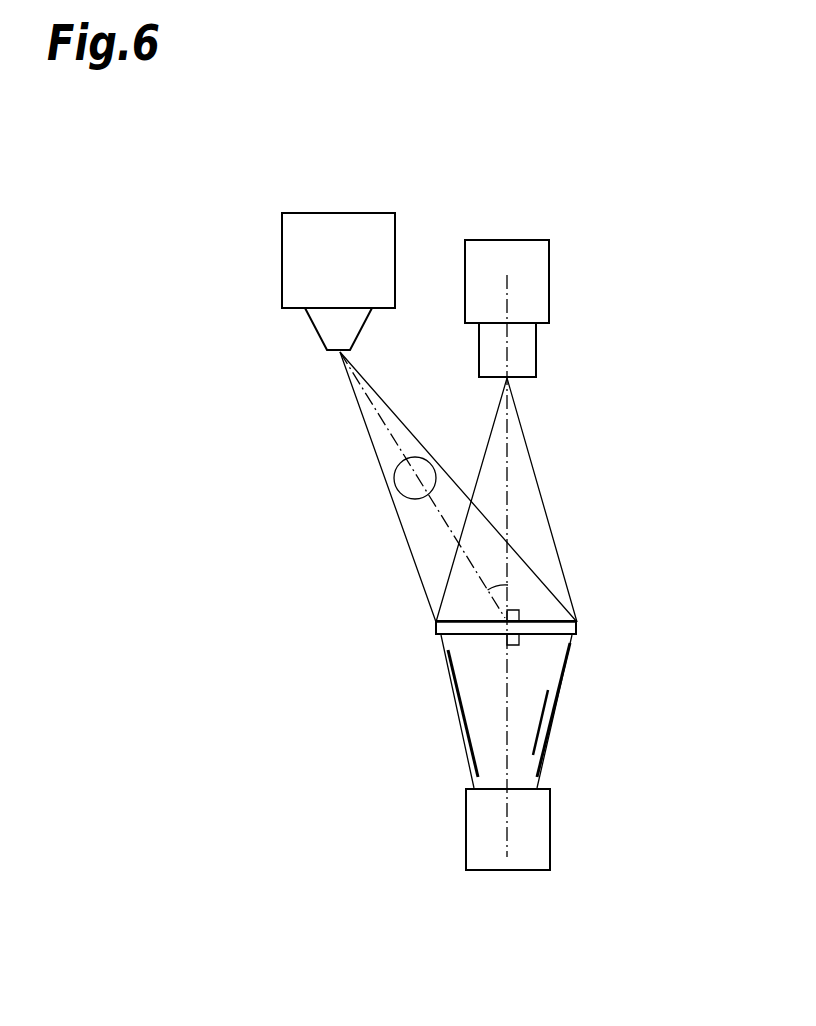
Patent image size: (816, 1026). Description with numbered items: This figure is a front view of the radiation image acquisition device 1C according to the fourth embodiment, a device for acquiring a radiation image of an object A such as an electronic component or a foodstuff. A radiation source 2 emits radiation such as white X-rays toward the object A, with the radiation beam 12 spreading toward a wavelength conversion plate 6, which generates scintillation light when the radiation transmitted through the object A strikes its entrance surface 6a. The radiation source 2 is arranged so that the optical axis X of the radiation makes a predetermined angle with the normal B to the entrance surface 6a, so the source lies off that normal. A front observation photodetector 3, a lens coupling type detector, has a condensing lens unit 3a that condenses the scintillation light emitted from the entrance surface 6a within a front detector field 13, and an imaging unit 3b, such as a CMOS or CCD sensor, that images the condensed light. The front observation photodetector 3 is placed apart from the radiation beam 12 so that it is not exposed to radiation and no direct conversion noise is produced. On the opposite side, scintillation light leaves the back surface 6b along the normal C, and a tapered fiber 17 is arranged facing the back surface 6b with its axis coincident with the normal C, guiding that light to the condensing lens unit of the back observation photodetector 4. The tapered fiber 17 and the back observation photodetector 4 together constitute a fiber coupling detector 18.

The radiation image acquisition device 1C is at (628, 236).
The radiation source 2 is at (342, 213).
The front observation photodetector 3 is at (550, 271).
The condensing lens unit 3a is at (536, 352).
The imaging unit 3b is at (549, 275).
The back observation photodetector 4 is at (550, 830).
The wavelength conversion plate 6 is at (590, 627).
The entrance surface 6a is at (546, 622).
The back surface 6b is at (540, 634).
The radiation beam 12 is at (420, 540).
The front detector field 13 is at (533, 525).
The tapered fiber 17 is at (553, 730).
The fiber coupling detector 18 is at (643, 738).
The object A is at (412, 497).
The normal B is at (507, 503).
The normal C is at (507, 720).
The optical axis X is at (392, 442).